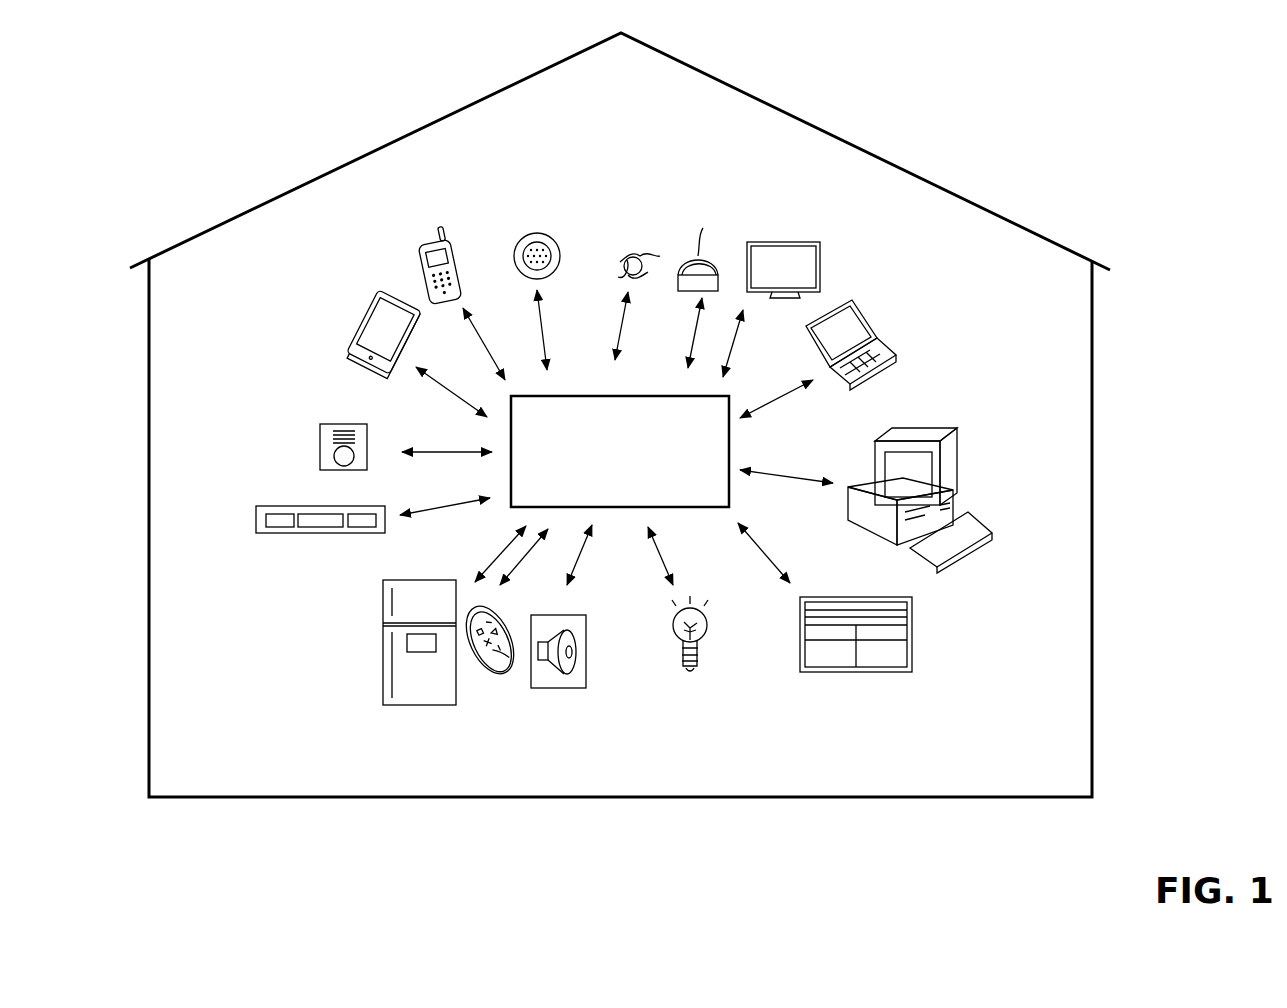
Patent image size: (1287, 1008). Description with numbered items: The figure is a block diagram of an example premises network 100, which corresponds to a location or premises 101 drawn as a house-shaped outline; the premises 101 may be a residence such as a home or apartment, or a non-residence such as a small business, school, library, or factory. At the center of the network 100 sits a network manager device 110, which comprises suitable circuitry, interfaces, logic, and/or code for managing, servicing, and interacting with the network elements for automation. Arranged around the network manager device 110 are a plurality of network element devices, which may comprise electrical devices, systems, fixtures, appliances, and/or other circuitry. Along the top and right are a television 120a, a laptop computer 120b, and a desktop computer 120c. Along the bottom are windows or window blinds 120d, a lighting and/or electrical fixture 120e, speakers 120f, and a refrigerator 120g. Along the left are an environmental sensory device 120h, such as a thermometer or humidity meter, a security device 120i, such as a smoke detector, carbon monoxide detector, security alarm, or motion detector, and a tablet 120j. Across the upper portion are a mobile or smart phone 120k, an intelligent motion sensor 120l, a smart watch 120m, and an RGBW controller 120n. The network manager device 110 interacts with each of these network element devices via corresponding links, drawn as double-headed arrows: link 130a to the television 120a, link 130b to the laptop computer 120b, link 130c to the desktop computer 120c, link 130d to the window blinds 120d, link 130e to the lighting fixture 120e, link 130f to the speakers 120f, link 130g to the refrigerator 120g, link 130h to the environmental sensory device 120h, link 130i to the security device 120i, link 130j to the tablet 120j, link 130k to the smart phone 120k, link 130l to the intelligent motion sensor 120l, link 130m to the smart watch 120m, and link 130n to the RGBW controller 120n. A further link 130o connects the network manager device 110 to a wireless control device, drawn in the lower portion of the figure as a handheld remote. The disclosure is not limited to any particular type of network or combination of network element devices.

The network 100 is at (637, 786).
The location or premises 101 is at (975, 210).
The network manager device 110 is at (607, 483).
The television 120a is at (801, 236).
The laptop computer 120b is at (866, 326).
The desktop computer 120c is at (940, 464).
The windows/window blinds 120d is at (911, 632).
The lighting and/or electrical fixture 120e is at (705, 648).
The speakers 120f is at (587, 662).
The refrigerator 120g is at (383, 652).
The environmental sensory device 120h is at (290, 506).
The security device 120i is at (320, 444).
The tablet 120j is at (365, 310).
The mobile/smart phone 120k is at (430, 244).
The intelligent motion sensor 120l is at (525, 236).
The smart watch 120m is at (634, 240).
The RGBW controller 120n is at (706, 232).
The link 130a is at (735, 340).
The link 130b is at (786, 397).
The link 130c is at (775, 472).
The link 130d is at (750, 542).
The link 130e is at (664, 558).
The link 130f is at (581, 560).
The link 130g is at (505, 551).
The link 130h is at (465, 503).
The link 130i is at (443, 452).
The link 130j is at (452, 390).
The link 130k is at (487, 339).
The link 130l is at (538, 326).
The link 130m is at (620, 322).
The link 130n is at (692, 330).
The link 130o is at (508, 578).